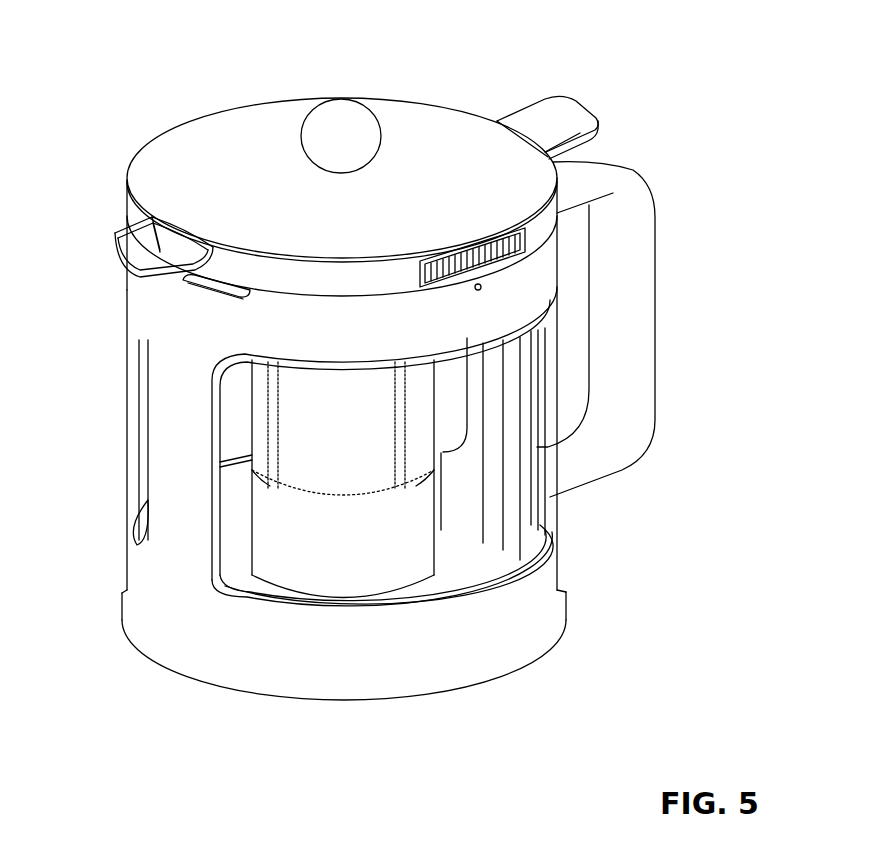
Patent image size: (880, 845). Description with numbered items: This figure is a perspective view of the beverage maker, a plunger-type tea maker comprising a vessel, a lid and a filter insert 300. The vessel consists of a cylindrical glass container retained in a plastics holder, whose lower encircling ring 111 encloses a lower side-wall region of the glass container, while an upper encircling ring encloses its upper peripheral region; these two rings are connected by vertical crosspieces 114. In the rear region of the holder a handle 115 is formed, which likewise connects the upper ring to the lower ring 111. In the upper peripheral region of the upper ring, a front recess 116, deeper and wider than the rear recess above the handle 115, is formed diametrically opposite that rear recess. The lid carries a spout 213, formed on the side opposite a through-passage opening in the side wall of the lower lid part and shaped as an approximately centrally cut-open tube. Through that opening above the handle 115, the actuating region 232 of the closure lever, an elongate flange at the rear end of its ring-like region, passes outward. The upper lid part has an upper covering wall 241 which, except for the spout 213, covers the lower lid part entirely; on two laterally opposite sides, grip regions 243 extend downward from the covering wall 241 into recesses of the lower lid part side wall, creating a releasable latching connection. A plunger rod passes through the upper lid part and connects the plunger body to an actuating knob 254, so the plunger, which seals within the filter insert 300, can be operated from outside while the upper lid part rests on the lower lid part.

The upper covering wall 241 is at (212, 133).
The actuating knob 254 is at (340, 127).
The actuating region 232 is at (565, 115).
The grip regions 243 is at (463, 262).
The spout 213 is at (136, 255).
The front recess 116 is at (200, 291).
The handle 115 is at (632, 285).
The vertical crosspieces 114 is at (188, 405).
The lower encircling ring 111 is at (523, 635).
The filter insert 300 is at (212, 650).